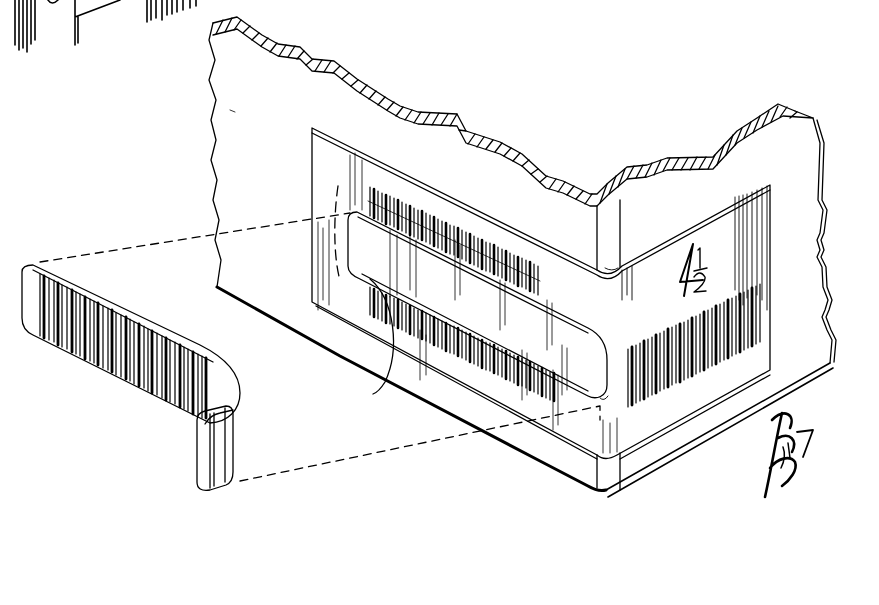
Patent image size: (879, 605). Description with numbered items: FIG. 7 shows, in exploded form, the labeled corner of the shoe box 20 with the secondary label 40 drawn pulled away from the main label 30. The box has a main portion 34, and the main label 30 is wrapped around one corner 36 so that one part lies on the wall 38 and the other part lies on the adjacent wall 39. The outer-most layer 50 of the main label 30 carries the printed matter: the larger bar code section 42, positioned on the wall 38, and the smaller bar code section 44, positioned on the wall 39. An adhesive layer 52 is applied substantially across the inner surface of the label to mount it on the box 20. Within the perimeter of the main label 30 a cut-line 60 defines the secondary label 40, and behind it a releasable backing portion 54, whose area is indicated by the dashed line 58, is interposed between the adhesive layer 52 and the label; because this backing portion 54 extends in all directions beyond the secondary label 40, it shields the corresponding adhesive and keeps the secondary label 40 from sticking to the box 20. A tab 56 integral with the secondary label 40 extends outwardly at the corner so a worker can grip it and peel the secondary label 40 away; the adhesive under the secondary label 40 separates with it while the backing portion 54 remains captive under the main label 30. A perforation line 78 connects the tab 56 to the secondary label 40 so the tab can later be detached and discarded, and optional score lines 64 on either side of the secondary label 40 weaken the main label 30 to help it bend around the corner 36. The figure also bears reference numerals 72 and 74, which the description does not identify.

The shoe box 20 is at (282, 75).
The main label 30 is at (510, 206).
The main portion 34 is at (368, 58).
The corner 36 is at (605, 222).
The wall 38 is at (386, 123).
The wall 39 is at (713, 232).
The secondary label 40 is at (84, 373).
The bar code section 42 is at (392, 322).
The bar code section 44 is at (727, 360).
The outer-most layer 50 is at (141, 390).
The adhesive layer 52 is at (233, 412).
The releasable backing portion 54 is at (412, 387).
The tab 56 is at (186, 450).
The dashed line 58 is at (385, 378).
The cut-line 60 is at (344, 290).
The score lines 64 is at (622, 266).
The clip fold 72 is at (207, 447).
The holder corner end 74 is at (608, 390).
The perforation line 78 is at (237, 423).